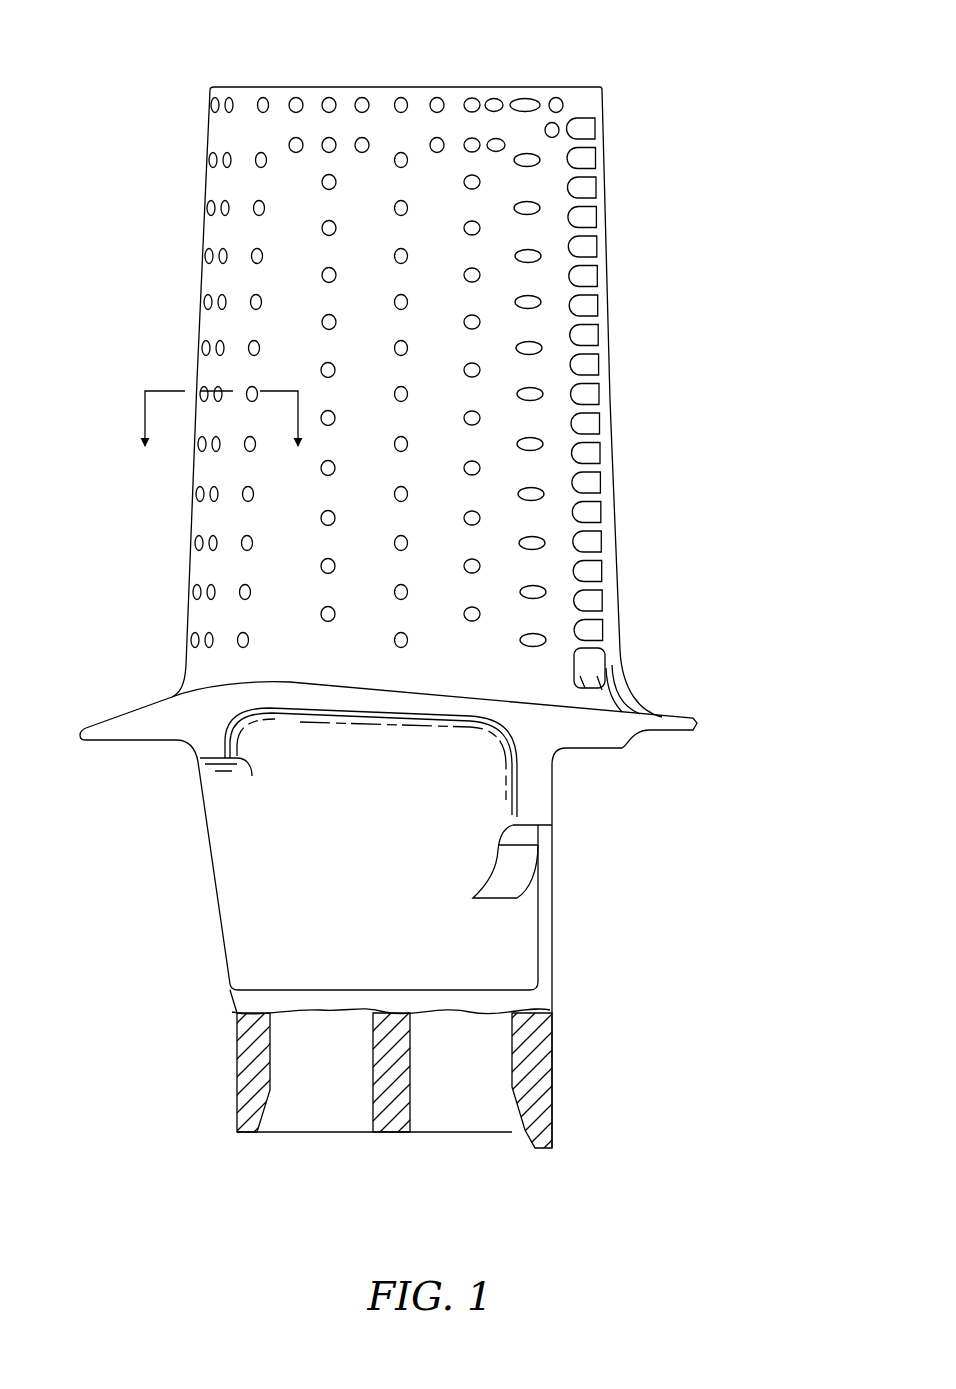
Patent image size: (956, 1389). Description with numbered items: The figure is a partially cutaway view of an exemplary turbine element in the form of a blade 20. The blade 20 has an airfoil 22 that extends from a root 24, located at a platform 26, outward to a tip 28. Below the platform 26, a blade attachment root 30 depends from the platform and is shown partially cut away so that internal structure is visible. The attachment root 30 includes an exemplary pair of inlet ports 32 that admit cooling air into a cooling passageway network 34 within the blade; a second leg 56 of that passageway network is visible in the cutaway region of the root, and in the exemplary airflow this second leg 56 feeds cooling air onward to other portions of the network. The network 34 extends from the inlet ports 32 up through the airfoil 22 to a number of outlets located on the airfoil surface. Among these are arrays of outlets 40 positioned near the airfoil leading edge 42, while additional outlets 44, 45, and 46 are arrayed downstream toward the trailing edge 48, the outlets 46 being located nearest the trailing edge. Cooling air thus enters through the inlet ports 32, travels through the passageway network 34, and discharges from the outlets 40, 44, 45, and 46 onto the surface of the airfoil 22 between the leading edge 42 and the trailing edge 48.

The blade 20 is at (670, 97).
The airfoil 22 is at (382, 413).
The root 24 is at (657, 684).
The platform 26 is at (693, 723).
The tip 28 is at (380, 86).
The blade attachment root 30 is at (480, 916).
The inlet ports 32 is at (316, 1150).
The cooling passageway network 34 is at (496, 1038).
The outlets 40 is at (247, 546).
The airfoil leading edge 42 is at (190, 557).
The outlets 44 is at (404, 346).
The outlets 45 is at (540, 348).
The outlets 46 is at (588, 333).
The trailing edge 48 is at (607, 214).
The second leg 56 is at (338, 1068).